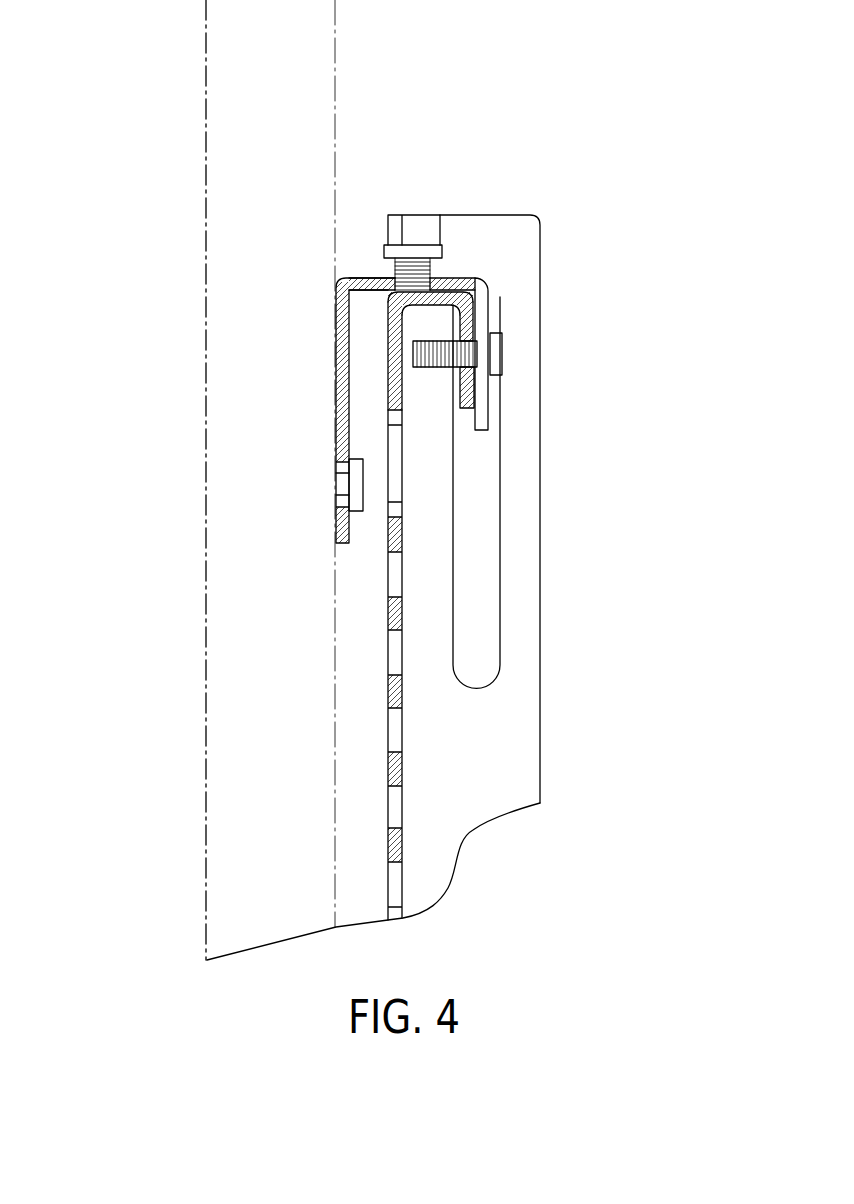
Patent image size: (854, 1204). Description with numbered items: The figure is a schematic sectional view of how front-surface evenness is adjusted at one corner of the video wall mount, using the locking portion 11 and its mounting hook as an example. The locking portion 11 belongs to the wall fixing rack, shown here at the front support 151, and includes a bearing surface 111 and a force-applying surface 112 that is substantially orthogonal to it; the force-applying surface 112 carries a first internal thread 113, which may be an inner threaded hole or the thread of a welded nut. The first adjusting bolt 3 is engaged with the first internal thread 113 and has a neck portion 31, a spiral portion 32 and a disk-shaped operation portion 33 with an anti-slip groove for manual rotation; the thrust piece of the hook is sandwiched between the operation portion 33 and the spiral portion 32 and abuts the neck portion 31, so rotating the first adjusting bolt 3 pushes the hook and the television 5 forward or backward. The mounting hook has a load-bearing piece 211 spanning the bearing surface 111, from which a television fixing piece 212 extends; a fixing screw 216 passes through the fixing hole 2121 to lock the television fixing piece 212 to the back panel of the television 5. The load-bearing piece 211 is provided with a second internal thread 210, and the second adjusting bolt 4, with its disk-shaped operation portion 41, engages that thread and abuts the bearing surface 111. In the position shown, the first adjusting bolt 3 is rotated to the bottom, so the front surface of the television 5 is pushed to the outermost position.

The television 5 is at (237, 135).
The television fixing piece 212 is at (291, 424).
The load-bearing piece 211 is at (362, 277).
The second internal thread 210 is at (398, 283).
The fixing hole 2121 is at (341, 499).
The fixing screw 216 is at (357, 513).
The second adjusting bolt 4 is at (457, 194).
The operation portion 41 is at (430, 250).
The front support 151 is at (498, 727).
The locking portion 11 is at (557, 294).
The bearing surface 111 is at (440, 298).
The force-applying surface 112 is at (467, 323).
The first internal thread 113 is at (490, 333).
The first adjusting bolt 3 is at (537, 398).
The neck portion 31 is at (445, 357).
The spiral portion 32 is at (465, 382).
The operation portion 33 is at (554, 354).